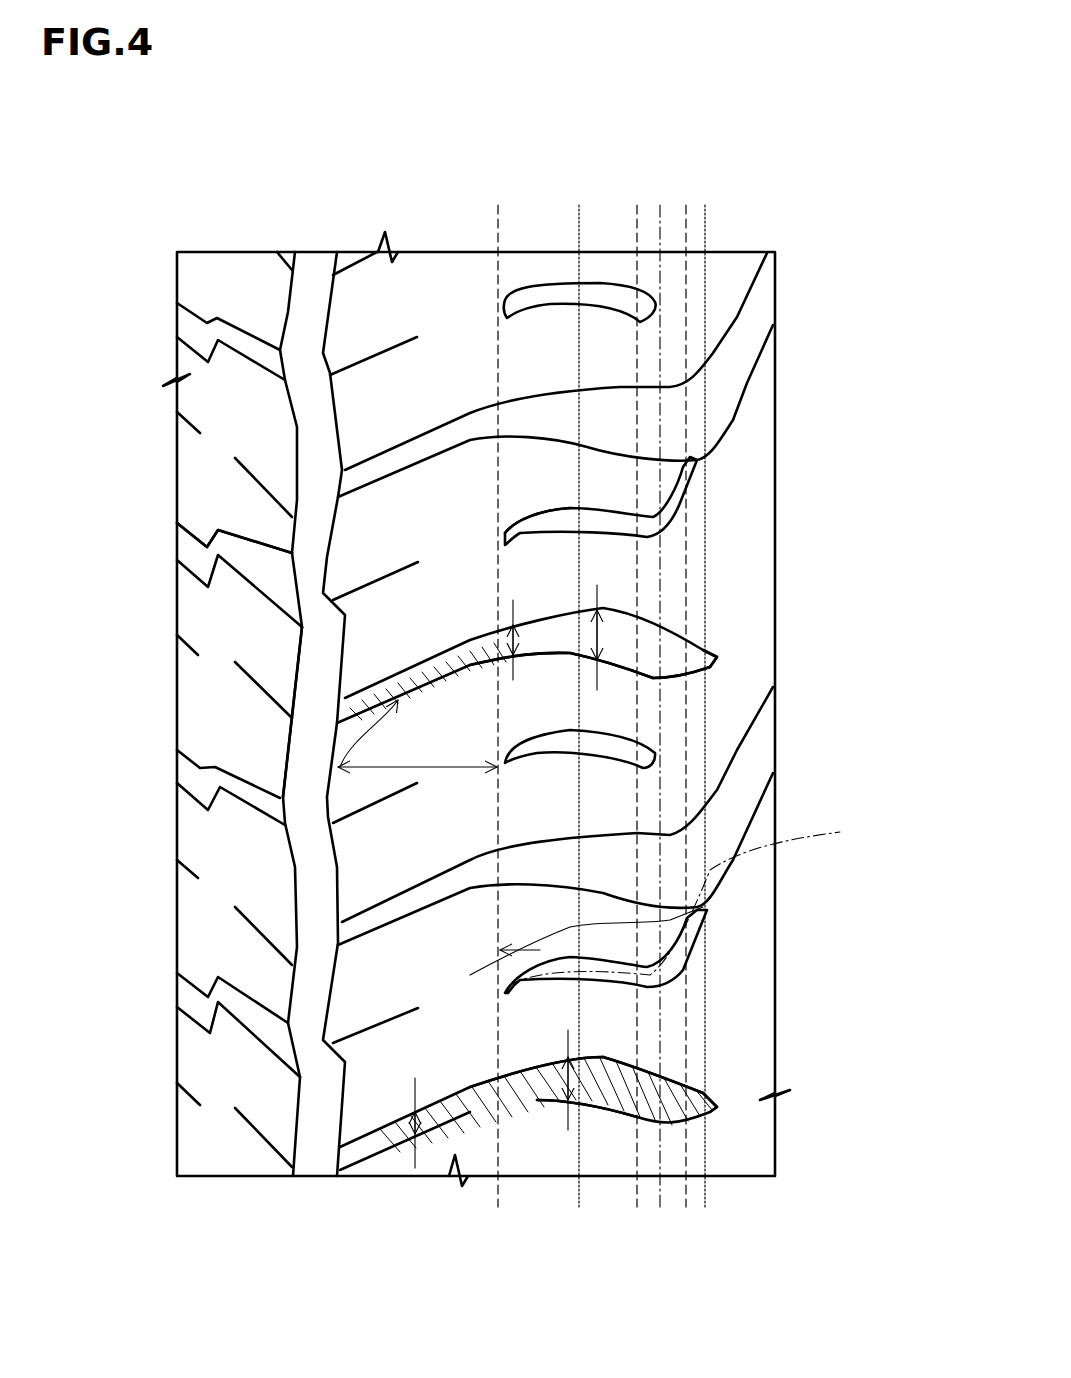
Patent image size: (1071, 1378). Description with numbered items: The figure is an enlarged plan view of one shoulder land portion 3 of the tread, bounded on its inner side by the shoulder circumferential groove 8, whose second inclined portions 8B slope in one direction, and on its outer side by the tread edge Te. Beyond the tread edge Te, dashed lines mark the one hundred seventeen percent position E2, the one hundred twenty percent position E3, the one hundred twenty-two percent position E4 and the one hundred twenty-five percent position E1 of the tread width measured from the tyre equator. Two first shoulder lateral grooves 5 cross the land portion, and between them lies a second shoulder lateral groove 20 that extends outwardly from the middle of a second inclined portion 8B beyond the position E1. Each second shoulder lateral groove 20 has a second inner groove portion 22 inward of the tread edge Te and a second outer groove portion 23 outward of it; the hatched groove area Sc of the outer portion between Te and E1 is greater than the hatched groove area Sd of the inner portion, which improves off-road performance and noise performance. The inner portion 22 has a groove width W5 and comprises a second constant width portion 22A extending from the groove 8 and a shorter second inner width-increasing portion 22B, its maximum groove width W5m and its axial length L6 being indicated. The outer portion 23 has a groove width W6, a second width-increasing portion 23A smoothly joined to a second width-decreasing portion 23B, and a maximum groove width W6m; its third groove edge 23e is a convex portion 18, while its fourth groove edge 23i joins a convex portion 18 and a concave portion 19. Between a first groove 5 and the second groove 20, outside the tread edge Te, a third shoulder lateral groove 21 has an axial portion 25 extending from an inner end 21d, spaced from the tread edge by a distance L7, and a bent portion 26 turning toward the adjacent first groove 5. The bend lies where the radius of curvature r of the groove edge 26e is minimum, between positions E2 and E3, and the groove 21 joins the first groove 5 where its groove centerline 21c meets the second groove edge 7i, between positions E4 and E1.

The shoulder land portion 3 is at (370, 195).
The third shoulder lateral groove 21 is at (513, 513).
The shoulder circumferential groove 8 is at (313, 283).
The axial portion 25 is at (550, 520).
The tread edge Te is at (498, 210).
The groove edge of the bent portion 26e is at (653, 517).
The radius of curvature r is at (640, 487).
The 125% position E1 is at (705, 220).
The 117% position E2 is at (637, 210).
The 120% position E3 is at (660, 215).
The 122% position E4 is at (686, 215).
The inner end 21d is at (500, 542).
The maximum groove width of the second inner groove portion W5m is at (517, 638).
The second shoulder lateral groove 20 is at (455, 638).
The second inner groove portion 22 is at (470, 658).
The second inclined portion 8B is at (293, 677).
The groove area of the second inner groove portion Sd is at (330, 767).
The length of the second inner groove portion L6 is at (340, 767).
The second outer groove portion 23 is at (560, 840).
The second groove edge 7i is at (495, 950).
The distance between inner end and tread edge L7 is at (470, 975).
The second inner width-increasing portion 22B is at (480, 1080).
The second constant width portion 22A is at (390, 1115).
The first shoulder lateral groove 5 is at (737, 432).
The bent portion 26 is at (677, 510).
The maximum groove width of the second outer groove portion W6m is at (597, 608).
The convex portion 18 is at (600, 600).
The third groove edge 23e is at (700, 637).
The concave portion 19 is at (677, 683).
The fourth groove edge 23i is at (862, 670).
The groove centerline 21c is at (703, 901).
The second width-increasing portion 23A is at (660, 1052).
The second width-decreasing portion 23B is at (683, 1063).
The groove area of the second outer groove portion Sc is at (700, 1085).
The groove width of the second inner groove portion W5 is at (403, 1123).
The groove width of the second outer groove portion W6 is at (580, 1067).